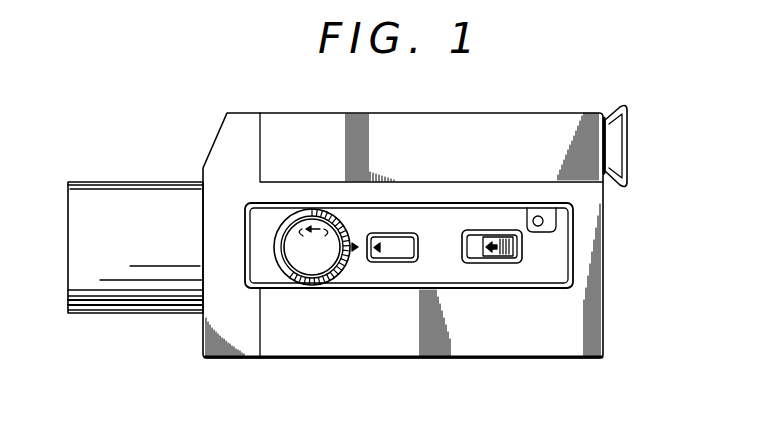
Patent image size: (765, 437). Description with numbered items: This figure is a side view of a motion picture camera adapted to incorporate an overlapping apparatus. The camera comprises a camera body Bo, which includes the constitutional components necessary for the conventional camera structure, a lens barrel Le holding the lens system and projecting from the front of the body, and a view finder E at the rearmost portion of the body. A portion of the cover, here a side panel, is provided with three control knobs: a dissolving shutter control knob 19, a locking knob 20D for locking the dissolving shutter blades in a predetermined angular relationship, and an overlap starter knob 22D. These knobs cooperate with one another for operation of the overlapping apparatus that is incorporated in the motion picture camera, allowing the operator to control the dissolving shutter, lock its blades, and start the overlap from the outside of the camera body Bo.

The camera body Bo is at (381, 127).
The lens barrel Le is at (144, 183).
The view finder E is at (625, 148).
The dissolving shutter control knob 19 is at (300, 270).
The locking knob 20D is at (394, 263).
The overlap starter knob 22D is at (490, 264).